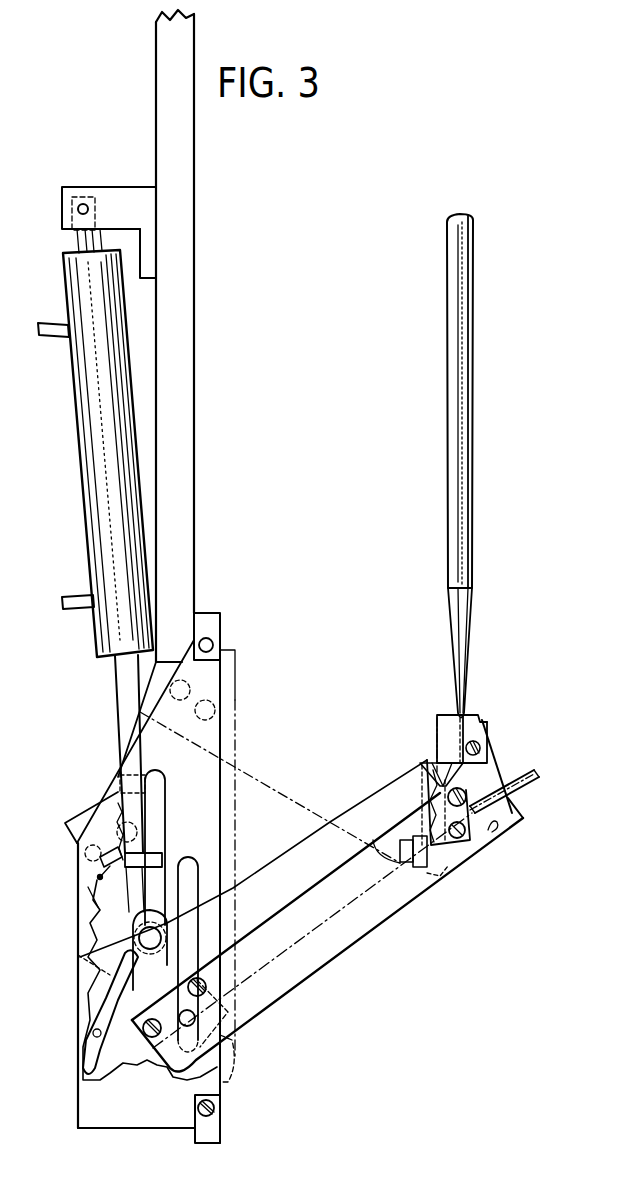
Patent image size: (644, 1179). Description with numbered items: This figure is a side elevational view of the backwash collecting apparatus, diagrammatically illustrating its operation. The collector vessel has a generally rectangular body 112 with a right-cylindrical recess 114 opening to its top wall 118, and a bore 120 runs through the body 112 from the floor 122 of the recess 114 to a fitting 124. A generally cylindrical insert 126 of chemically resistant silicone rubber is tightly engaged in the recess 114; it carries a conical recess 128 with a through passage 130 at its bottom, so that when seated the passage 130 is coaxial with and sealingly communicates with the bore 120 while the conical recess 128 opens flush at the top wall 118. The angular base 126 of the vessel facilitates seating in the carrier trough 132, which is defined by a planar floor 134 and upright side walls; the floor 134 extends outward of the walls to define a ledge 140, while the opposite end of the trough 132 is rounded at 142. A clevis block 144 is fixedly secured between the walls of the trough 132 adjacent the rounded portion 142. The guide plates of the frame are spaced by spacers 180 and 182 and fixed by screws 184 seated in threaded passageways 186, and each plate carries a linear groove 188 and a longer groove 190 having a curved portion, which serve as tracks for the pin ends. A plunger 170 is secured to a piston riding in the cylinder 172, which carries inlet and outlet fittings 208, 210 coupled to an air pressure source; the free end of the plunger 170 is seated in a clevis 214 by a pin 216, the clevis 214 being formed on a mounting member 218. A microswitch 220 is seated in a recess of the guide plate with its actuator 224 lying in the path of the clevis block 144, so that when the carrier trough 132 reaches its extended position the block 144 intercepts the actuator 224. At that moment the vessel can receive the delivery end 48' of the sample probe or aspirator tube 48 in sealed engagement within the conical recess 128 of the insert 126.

The sample probe 48 is at (480, 401).
The delivery end 48' is at (436, 653).
The body 112 is at (427, 793).
The recess 114 is at (493, 713).
The top wall 118 is at (435, 713).
The bore 120 is at (478, 808).
The floor 122 is at (480, 740).
The fitting 124 is at (402, 860).
The insert 126 is at (427, 767).
The conical recess 128 is at (470, 703).
The through passage 130 is at (420, 767).
The carrier trough 132 is at (240, 765).
The planar floor 134 is at (493, 838).
The ledge 140 is at (233, 653).
The rounded portion 142 is at (177, 1073).
The clevis block 144 is at (112, 948).
The plunger 170 is at (128, 692).
The air cylinder 172 is at (72, 468).
The spacer 180 is at (215, 620).
The spacer 182 is at (210, 1134).
The screws 184 is at (218, 1106).
The threaded passageways 186 is at (223, 645).
The groove 188 is at (188, 857).
The groove 190 is at (92, 1033).
The inlet fitting 208 is at (62, 603).
The outlet fitting 210 is at (53, 338).
The clevis 214 is at (130, 207).
The pin 216 is at (78, 209).
The mounting member 218 is at (150, 248).
The microswitch 220 is at (72, 825).
The actuator 224 is at (100, 878).